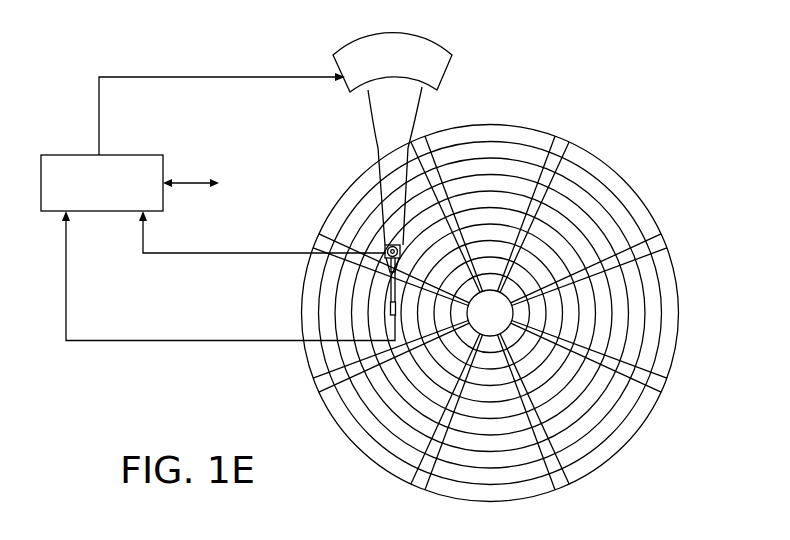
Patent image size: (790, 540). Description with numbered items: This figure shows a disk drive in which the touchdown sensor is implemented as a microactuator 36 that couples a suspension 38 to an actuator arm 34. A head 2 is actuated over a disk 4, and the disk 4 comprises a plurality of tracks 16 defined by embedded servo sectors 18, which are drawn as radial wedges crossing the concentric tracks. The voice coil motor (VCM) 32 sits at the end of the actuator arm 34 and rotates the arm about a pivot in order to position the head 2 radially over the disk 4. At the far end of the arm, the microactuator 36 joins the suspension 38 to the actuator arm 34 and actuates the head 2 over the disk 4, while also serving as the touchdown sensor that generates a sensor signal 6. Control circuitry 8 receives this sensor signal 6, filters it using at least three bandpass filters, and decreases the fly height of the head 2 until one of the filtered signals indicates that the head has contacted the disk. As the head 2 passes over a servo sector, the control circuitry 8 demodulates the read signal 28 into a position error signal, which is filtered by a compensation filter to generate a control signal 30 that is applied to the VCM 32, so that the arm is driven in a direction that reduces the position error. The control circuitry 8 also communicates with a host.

The head 2 is at (386, 312).
The disk 4 is at (621, 170).
The sensor signal 6 is at (224, 254).
The control circuitry 8 is at (136, 155).
The tracks 16 is at (488, 152).
The servo sectors 18 is at (563, 143).
The read signal 28 is at (213, 342).
The control signal 30 is at (99, 100).
The voice coil motor (VCM) 32 is at (349, 88).
The actuator arm 34 is at (377, 150).
The microactuator 36 is at (405, 249).
The suspension 38 is at (385, 285).